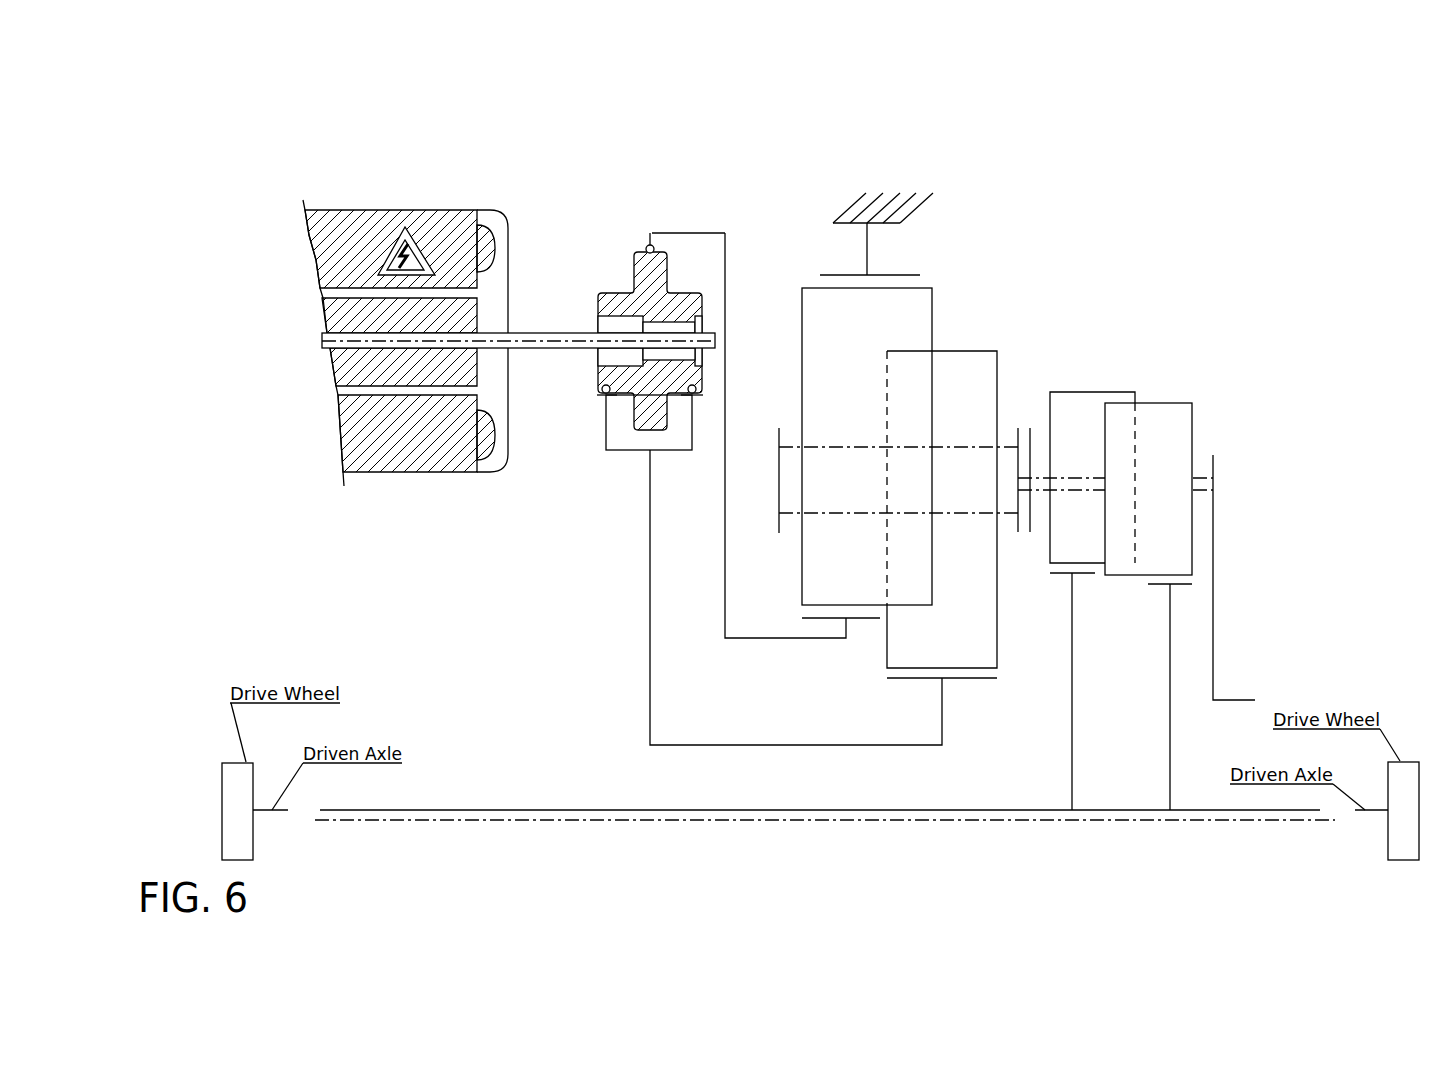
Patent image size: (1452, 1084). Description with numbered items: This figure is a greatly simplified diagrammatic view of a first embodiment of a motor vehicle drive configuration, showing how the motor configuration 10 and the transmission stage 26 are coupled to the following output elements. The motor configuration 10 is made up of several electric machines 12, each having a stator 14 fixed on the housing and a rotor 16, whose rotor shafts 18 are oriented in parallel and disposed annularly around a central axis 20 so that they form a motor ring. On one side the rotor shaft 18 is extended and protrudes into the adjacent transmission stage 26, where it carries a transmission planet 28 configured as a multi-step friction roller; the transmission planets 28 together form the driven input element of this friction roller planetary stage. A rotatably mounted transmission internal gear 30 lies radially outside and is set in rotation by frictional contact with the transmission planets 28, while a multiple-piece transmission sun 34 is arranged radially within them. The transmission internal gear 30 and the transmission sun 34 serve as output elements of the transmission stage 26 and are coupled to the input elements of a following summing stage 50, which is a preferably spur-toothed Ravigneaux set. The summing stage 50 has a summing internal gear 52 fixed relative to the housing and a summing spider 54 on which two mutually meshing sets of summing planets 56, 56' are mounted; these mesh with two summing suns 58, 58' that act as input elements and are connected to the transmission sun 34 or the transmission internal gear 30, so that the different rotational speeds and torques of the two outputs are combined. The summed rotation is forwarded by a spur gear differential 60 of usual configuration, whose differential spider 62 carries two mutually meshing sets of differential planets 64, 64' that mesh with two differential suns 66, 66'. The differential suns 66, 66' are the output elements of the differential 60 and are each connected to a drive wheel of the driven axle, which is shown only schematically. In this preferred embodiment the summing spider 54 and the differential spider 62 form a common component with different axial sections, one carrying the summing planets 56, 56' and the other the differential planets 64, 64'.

The motor configuration 10 is at (367, 572).
The electric machine 12 is at (268, 194).
The stator 14 is at (420, 455).
The rotor 16 is at (365, 372).
The rotor shaft 18 is at (546, 334).
The central axis 20 is at (637, 810).
The transmission stage 26 is at (606, 574).
The transmission planet 28 is at (624, 297).
The transmission internal gear 30 is at (647, 244).
The transmission sun 34 is at (650, 468).
The summing stage 50 is at (872, 782).
The summing internal gear 52 is at (910, 275).
The summing spider 54 is at (779, 428).
The summing planet 56 is at (974, 463).
The summing planet 56' is at (900, 432).
The summing sun 58 is at (949, 714).
The summing sun 58' is at (802, 465).
The spur gear differential 60 is at (1120, 782).
The differential spider 62 is at (1213, 478).
The differential planet 64 is at (1092, 446).
The differential planet 64' is at (1150, 451).
The differential sun 66 is at (1093, 691).
The differential sun 66' is at (1149, 697).